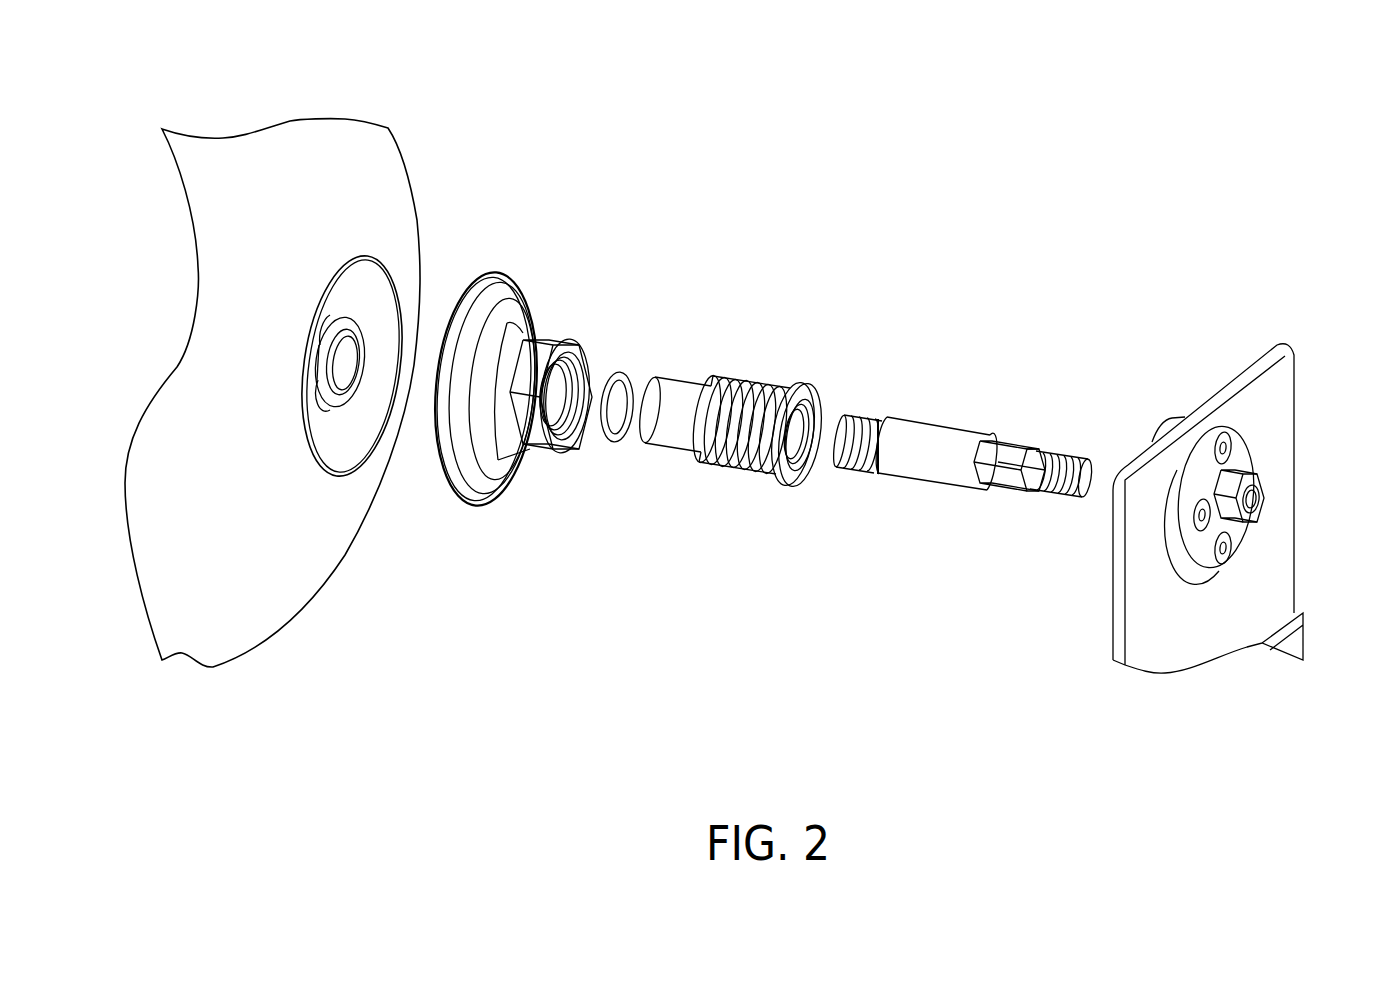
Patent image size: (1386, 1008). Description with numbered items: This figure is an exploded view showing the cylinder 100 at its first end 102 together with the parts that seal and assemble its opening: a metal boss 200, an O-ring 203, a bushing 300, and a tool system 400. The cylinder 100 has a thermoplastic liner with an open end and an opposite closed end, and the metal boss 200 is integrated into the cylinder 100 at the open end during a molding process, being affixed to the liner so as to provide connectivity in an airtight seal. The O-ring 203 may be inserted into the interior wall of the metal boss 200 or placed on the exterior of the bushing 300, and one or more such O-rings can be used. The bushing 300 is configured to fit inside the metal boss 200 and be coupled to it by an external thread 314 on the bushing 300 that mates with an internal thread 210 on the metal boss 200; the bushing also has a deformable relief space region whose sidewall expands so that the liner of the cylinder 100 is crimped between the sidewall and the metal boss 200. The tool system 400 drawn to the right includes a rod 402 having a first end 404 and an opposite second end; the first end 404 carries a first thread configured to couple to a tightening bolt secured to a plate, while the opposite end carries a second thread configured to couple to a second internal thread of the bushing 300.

The cylinder 100 is at (326, 364).
The first end 102 is at (418, 178).
The metal boss 200 is at (601, 349).
The O-ring 203 is at (617, 370).
The internal thread 210 is at (583, 363).
The bushing 300 is at (745, 437).
The external thread 314 is at (746, 480).
The tool system 400 is at (1097, 472).
The rod 402 is at (929, 478).
The first end 404 is at (1253, 520).